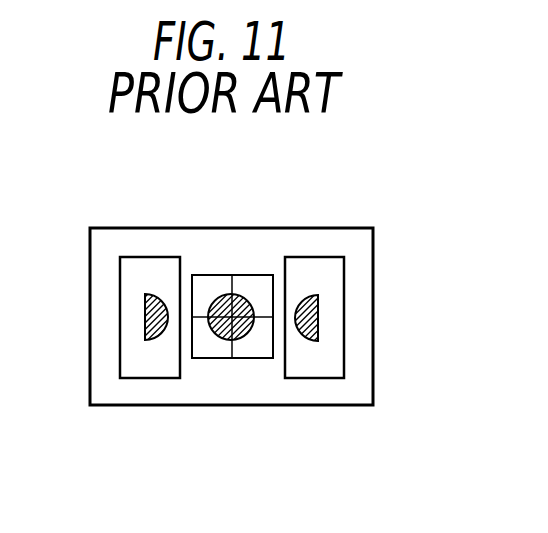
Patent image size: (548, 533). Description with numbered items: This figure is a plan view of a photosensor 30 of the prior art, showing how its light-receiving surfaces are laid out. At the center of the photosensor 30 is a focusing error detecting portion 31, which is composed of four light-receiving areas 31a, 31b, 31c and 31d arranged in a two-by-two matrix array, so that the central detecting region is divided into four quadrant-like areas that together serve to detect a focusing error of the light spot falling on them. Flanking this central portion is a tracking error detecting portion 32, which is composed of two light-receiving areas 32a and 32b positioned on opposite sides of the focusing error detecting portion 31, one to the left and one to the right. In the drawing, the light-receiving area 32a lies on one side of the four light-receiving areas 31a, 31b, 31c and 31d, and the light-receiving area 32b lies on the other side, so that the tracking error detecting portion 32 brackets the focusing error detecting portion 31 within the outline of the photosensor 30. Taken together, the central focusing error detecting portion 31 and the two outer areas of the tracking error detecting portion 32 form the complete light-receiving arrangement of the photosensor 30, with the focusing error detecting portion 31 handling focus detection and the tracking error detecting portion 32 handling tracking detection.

The photosensor 30 is at (387, 365).
The focusing error detecting portion 31 is at (227, 262).
The light-receiving area 31a is at (208, 280).
The light-receiving area 31b is at (250, 282).
The light-receiving area 31c is at (267, 342).
The light-receiving area 31d is at (175, 259).
The tracking error detecting portion 32 is at (232, 373).
The light-receiving area 32a is at (160, 378).
The light-receiving area 32b is at (298, 372).